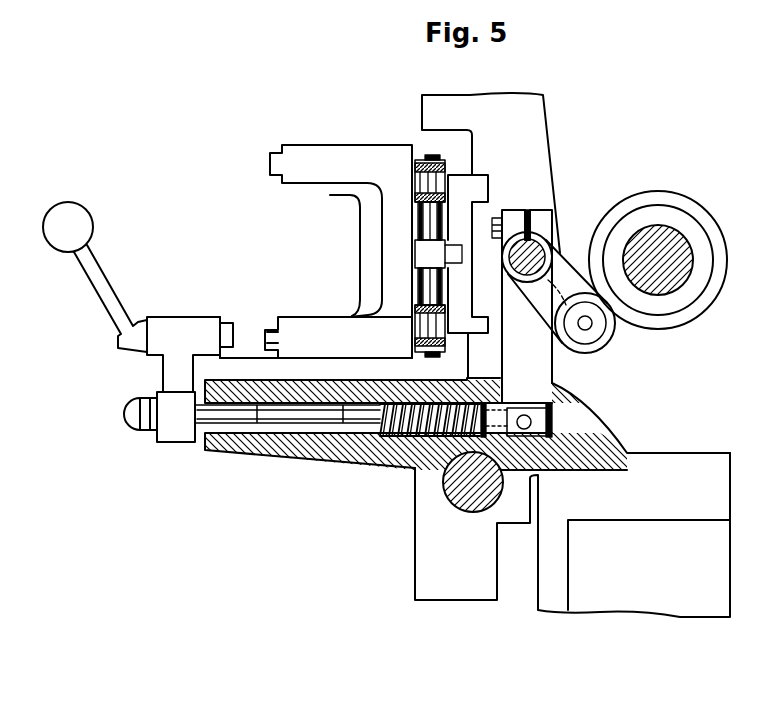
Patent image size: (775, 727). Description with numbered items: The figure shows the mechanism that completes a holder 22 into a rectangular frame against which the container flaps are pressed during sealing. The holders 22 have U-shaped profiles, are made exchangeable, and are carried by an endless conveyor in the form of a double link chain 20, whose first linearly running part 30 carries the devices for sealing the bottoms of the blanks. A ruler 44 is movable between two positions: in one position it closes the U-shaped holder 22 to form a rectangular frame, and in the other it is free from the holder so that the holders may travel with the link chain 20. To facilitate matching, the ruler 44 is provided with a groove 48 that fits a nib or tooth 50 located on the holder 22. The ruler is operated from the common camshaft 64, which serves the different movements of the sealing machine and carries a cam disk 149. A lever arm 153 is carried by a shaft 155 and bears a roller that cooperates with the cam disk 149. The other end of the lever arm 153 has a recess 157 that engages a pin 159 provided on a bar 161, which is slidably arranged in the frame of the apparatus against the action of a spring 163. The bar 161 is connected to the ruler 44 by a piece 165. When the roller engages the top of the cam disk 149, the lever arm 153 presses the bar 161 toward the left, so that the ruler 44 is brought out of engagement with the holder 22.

The double link chain 20 is at (410, 338).
The holder 22 is at (342, 177).
The linearly running part 30 is at (447, 167).
The ruler 44 is at (254, 328).
The groove 48 is at (280, 327).
The nib or tooth 50 is at (270, 160).
The common camshaft 64 is at (681, 250).
The cam disk 149 is at (712, 312).
The lever arm 153 is at (534, 383).
The shaft 155 is at (554, 238).
The recess 157 is at (550, 428).
The pin 159 is at (555, 413).
The bar 161 is at (553, 438).
The spring 163 is at (412, 447).
The piece 165 is at (184, 438).